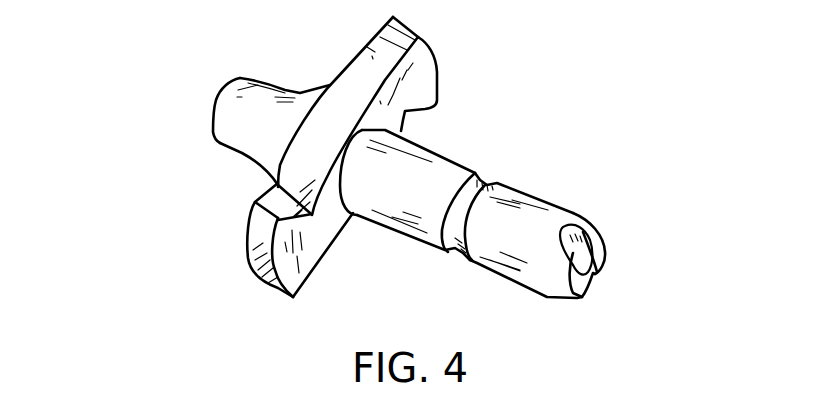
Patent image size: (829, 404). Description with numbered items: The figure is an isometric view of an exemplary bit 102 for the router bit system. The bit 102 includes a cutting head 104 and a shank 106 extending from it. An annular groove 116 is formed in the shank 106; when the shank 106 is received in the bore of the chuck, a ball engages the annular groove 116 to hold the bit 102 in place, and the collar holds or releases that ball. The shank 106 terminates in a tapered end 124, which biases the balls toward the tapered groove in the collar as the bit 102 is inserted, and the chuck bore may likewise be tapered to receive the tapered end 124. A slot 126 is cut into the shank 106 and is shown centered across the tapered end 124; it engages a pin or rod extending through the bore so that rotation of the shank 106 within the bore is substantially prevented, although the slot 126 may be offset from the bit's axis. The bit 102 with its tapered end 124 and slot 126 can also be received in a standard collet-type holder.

The bit 102 is at (283, 90).
The cutting head 104 is at (258, 238).
The shank 106 is at (418, 167).
The annular groove 116 is at (490, 177).
The tapered end 124 is at (588, 223).
The slot 126 is at (603, 267).